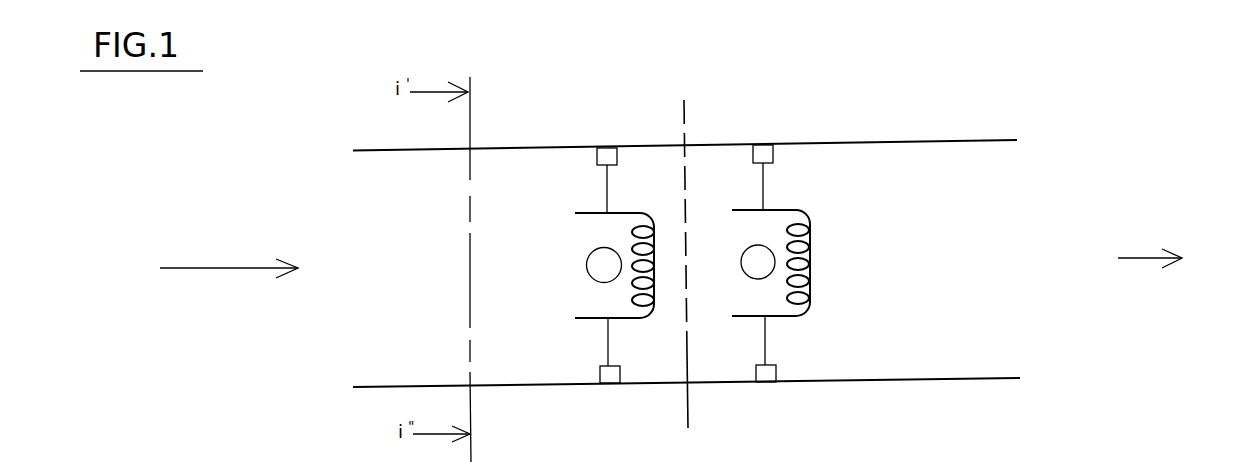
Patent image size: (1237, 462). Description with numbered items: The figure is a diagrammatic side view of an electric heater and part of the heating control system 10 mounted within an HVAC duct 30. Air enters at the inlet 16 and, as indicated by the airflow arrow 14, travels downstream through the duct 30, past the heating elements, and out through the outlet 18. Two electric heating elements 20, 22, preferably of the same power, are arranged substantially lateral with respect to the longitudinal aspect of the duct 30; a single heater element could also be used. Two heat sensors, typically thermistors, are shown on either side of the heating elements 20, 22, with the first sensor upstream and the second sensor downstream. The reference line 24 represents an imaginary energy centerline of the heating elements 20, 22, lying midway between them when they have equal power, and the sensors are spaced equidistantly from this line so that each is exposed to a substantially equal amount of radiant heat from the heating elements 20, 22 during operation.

The heating control system 10 is at (1020, 85).
The airflow arrow 14 is at (257, 268).
The inlet 16 is at (206, 152).
The outlet 18 is at (1148, 164).
The electric heating element 20 is at (590, 212).
The electric heating element 22 is at (805, 211).
The reference line 24 is at (684, 122).
The duct 30 is at (872, 143).